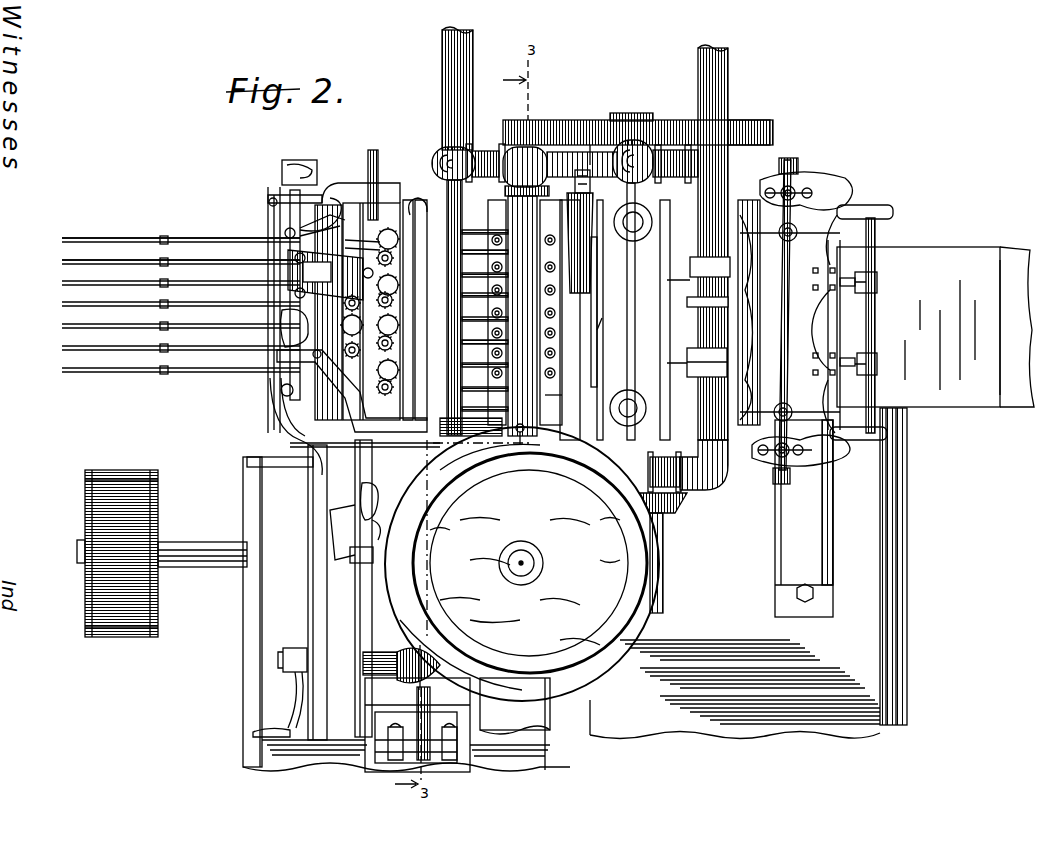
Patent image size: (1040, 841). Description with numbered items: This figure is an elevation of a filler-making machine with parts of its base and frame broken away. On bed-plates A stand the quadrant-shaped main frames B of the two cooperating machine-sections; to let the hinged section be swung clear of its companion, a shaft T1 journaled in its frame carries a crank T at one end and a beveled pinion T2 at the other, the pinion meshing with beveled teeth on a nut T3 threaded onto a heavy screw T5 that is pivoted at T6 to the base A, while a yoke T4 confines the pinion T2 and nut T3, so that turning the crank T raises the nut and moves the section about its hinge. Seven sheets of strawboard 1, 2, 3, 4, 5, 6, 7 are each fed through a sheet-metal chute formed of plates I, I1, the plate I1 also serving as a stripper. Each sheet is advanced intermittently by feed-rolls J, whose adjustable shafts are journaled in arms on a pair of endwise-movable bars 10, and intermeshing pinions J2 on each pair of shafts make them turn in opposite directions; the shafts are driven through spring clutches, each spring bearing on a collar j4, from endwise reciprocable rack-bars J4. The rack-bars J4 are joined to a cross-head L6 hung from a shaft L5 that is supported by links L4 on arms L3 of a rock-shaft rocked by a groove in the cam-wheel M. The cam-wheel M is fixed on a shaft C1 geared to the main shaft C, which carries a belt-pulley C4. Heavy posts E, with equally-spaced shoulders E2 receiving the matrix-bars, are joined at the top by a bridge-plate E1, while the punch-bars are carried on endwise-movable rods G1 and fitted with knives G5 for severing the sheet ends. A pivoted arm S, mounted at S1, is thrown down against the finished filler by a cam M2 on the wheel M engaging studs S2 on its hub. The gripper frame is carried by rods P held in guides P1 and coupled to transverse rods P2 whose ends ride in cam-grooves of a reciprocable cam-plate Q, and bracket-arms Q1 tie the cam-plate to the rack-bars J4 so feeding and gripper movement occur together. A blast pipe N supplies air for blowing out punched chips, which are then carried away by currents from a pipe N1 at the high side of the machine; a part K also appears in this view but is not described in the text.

The sheet of strawboard 1 is at (171, 240).
The sheet of strawboard 2 is at (171, 262).
The sheet of strawboard 3 is at (171, 283).
The sheet of strawboard 4 is at (171, 304).
The sheet of strawboard 5 is at (171, 326).
The sheet of strawboard 6 is at (171, 348).
The sheet of strawboard 7 is at (172, 370).
The sheet-metal plate I is at (228, 262).
The sheet-metal plate I1 is at (230, 240).
The cam-plate Q is at (272, 213).
The bracket-arm Q1 is at (325, 275).
The rod P is at (470, 245).
The guide P1 is at (873, 287).
The transverse rod P2 is at (310, 232).
The feed-roll J is at (422, 301).
The pinion J2 is at (418, 225).
The rack-bar J4 is at (378, 168).
The collar j4 is at (362, 245).
The pipe N is at (619, 329).
The pipe N1 is at (449, 182).
The cam M2 is at (565, 158).
The arm S is at (597, 272).
The pivot S1 is at (592, 186).
The stud S2 is at (585, 170).
The rod G1 is at (636, 216).
The knife G5 is at (608, 319).
The post E is at (534, 320).
The bridge-plate E1 is at (462, 215).
The shoulder E2 is at (562, 402).
The bracket K is at (830, 185).
The bar 10 is at (796, 232).
The bed-plate A is at (243, 630).
The main frame B is at (317, 521).
The main shaft C is at (186, 542).
The shaft C1 is at (535, 560).
The pulley C4 is at (115, 637).
The cam-wheel M is at (522, 564).
The arm L3 is at (388, 518).
The link L4 is at (384, 515).
The shaft L5 is at (375, 497).
The cross-head L6 is at (352, 563).
The crank T is at (290, 710).
The shaft T1 is at (285, 660).
The beveled pinion T2 is at (398, 656).
The nut T3 is at (432, 685).
The yoke T4 is at (400, 686).
The screw T5 is at (488, 716).
The pivot T6 is at (457, 750).